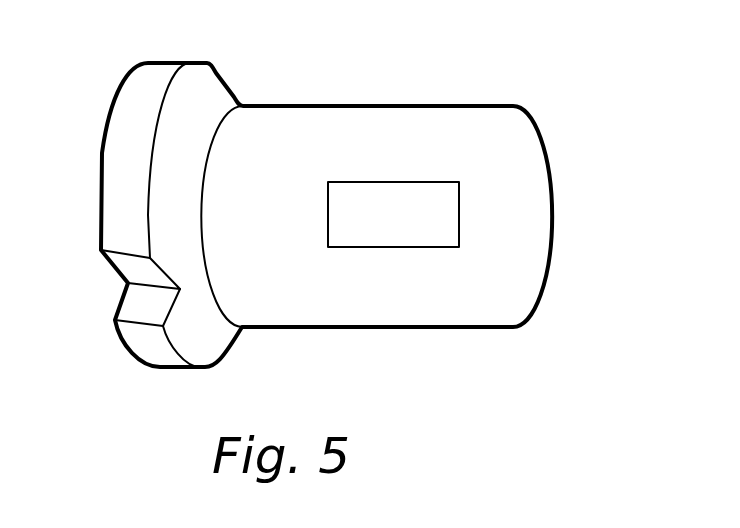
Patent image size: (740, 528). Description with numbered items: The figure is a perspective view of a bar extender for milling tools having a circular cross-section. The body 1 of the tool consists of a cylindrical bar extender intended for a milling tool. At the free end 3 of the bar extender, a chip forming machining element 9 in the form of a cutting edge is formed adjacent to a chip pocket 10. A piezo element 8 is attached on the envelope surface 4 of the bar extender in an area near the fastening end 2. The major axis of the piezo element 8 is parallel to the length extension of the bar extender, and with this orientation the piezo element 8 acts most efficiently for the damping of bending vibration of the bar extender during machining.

The body 1 is at (327, 105).
The fastening end 2 is at (513, 212).
The free end 3 is at (102, 152).
The envelope surface 4 is at (335, 305).
The piezo element 8 is at (380, 197).
The chip forming machining element 9 is at (123, 250).
The chip pocket 10 is at (118, 285).